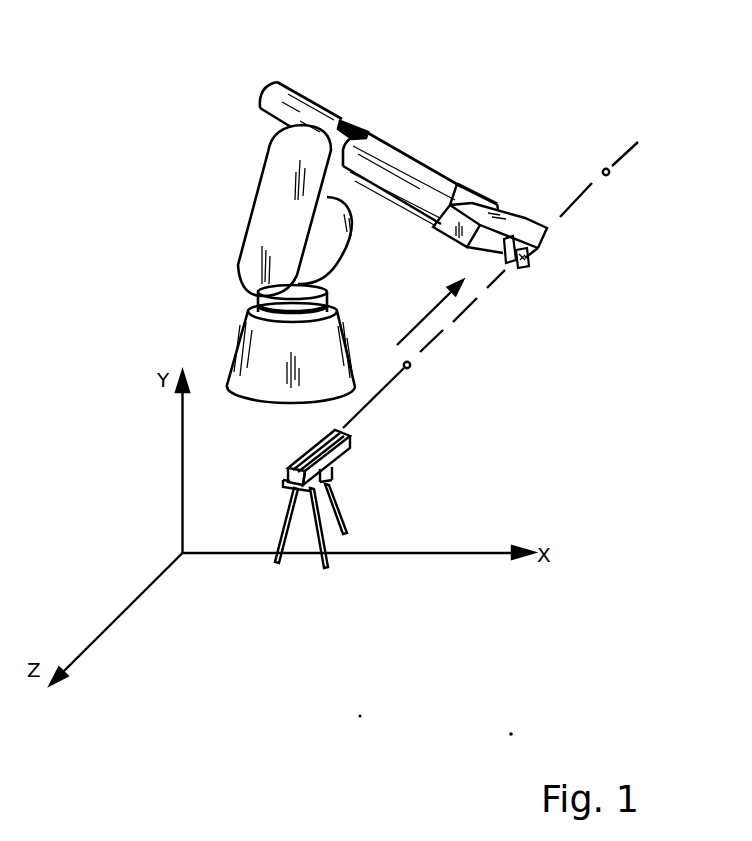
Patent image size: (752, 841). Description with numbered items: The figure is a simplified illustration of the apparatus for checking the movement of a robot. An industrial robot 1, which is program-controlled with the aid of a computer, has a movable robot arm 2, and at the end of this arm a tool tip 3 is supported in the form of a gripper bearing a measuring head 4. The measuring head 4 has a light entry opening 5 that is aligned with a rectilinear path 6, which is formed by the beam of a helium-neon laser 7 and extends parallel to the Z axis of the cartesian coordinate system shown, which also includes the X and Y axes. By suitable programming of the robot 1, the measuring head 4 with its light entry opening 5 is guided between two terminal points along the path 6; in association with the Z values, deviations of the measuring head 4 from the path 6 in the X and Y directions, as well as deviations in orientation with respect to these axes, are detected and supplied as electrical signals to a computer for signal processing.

The industrial robot 1 is at (283, 220).
The robot arm 2 is at (403, 172).
The tool tip 3 is at (485, 183).
The measuring head 4 is at (552, 237).
The light entry opening 5 is at (533, 253).
The rectilinear path 6 is at (433, 341).
The helium-neon laser 7 is at (325, 453).